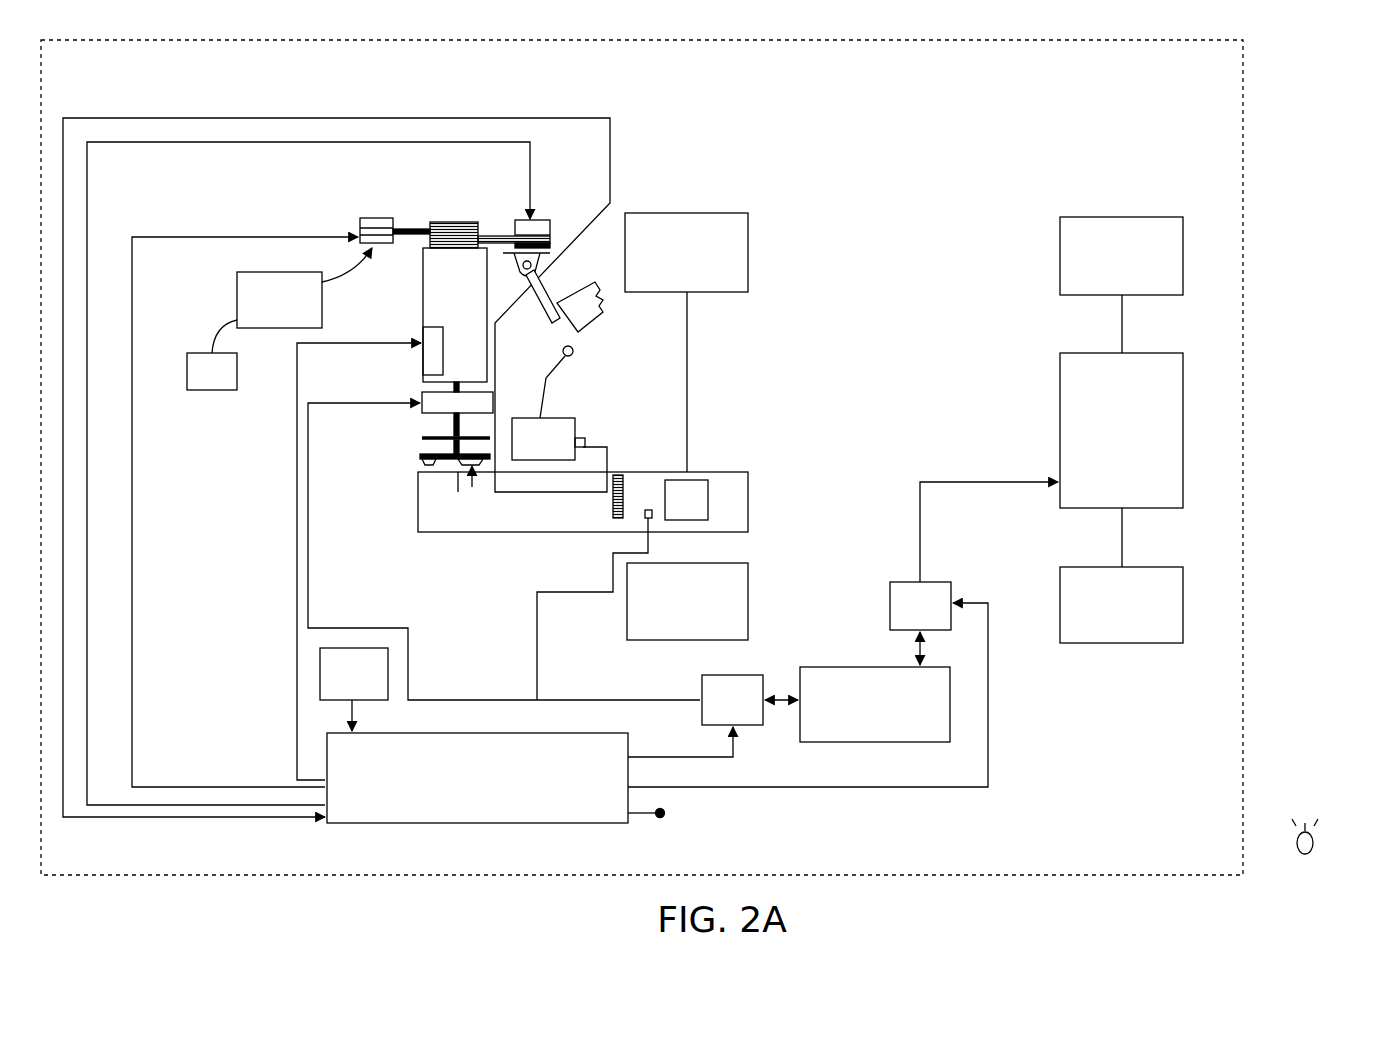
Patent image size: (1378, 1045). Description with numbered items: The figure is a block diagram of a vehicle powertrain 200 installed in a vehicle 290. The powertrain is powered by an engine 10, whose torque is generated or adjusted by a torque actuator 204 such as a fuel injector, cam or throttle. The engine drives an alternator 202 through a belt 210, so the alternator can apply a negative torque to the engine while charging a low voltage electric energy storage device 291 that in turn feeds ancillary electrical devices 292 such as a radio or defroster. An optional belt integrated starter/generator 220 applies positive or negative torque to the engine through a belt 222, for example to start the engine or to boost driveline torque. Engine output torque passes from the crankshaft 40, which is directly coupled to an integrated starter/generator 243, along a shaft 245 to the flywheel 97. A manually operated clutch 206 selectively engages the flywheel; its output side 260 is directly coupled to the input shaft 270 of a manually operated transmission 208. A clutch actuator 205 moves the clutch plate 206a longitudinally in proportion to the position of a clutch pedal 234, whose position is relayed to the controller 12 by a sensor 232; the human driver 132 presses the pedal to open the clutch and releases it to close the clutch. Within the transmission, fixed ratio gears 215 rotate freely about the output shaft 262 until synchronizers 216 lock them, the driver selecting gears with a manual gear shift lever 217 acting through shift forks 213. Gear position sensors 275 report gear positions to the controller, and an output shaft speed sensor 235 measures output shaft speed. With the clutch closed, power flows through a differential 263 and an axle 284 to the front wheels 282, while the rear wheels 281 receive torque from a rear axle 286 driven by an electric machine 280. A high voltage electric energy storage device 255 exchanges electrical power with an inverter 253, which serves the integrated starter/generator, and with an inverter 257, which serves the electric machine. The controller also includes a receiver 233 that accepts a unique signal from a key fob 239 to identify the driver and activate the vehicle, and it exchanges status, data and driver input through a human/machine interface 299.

The vehicle powertrain 200 is at (1105, 184).
The engine 10 is at (420, 318).
The controller 12 is at (455, 824).
The crankshaft 40 is at (421, 391).
The flywheel 97 is at (422, 437).
The human driver 132 is at (603, 312).
The alternator 202 is at (367, 219).
The torque actuator 204 is at (421, 334).
The clutch actuator 205 is at (497, 398).
The manually operated clutch 206 is at (410, 452).
The manually operated clutch plate 206a is at (432, 462).
The manually operated transmission 208 is at (462, 533).
The belt 210 is at (408, 226).
The shift forks 213 is at (610, 470).
The gears 215 is at (624, 490).
The synchronizers 216 is at (618, 472).
The manual gear shift lever 217 is at (560, 373).
The belt integrated starter/generator 220 is at (545, 220).
The belt 222 is at (492, 234).
The sensor 232 is at (540, 262).
The receiver 233 is at (639, 815).
The clutch pedal 234 is at (548, 305).
The output shaft speed sensor 235 is at (652, 519).
The key fob 239 is at (1305, 854).
The integrated starter/generator 243 is at (422, 392).
The shaft 245 is at (454, 429).
The inverter 253 is at (695, 716).
The high voltage electric energy storage device 255 is at (857, 687).
The inverter 257 is at (808, 684).
The output side 260 is at (434, 463).
The output shaft 262 is at (641, 515).
The differential 263 is at (693, 500).
The transmission input shaft 270 is at (446, 467).
The gear position sensors 275 is at (582, 437).
The electric machine 280 is at (1051, 467).
The rear wheels 281 is at (1120, 644).
The front wheels 282 is at (626, 608).
The axle 284 is at (688, 317).
The rear axle 286 is at (1121, 310).
The vehicle 290 is at (945, 876).
The electric energy storage device 291 is at (304, 288).
The ancillary electrical devices 292 is at (212, 355).
The human/machine interface 299 is at (354, 689).